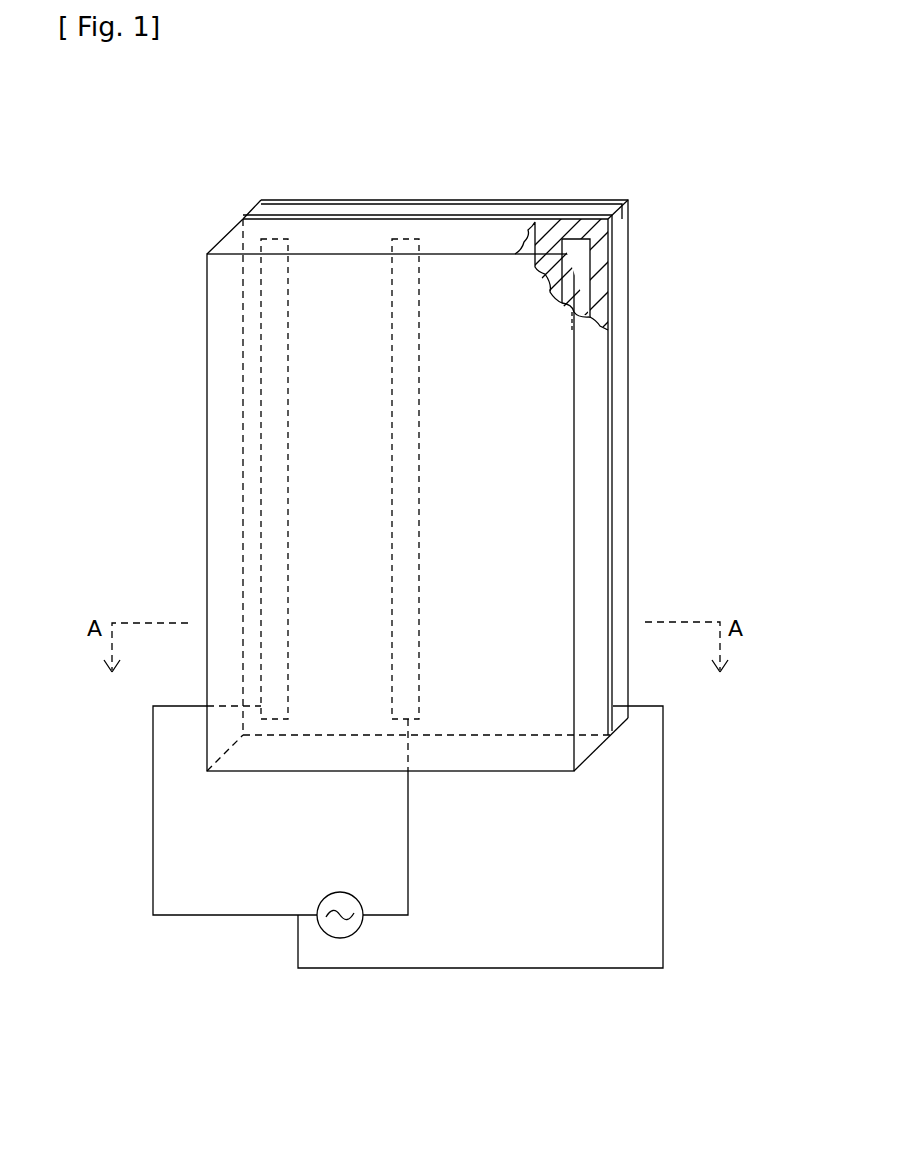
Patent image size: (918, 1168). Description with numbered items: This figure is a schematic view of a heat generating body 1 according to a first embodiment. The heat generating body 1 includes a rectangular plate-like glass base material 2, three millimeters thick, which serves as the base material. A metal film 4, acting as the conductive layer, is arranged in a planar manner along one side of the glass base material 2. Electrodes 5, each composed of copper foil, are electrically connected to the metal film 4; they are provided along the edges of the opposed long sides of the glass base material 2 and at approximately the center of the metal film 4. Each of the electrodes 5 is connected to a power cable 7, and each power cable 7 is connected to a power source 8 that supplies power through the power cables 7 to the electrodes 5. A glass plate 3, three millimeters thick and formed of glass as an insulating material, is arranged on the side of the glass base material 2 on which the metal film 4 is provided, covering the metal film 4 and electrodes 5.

The heat generating body 1 is at (688, 137).
The glass base material 2 is at (630, 262).
The glass plate 3 is at (207, 318).
The metal film 4 is at (598, 235).
The electrodes 5 is at (268, 238).
The power cable 7 is at (153, 845).
The power source 8 is at (345, 892).